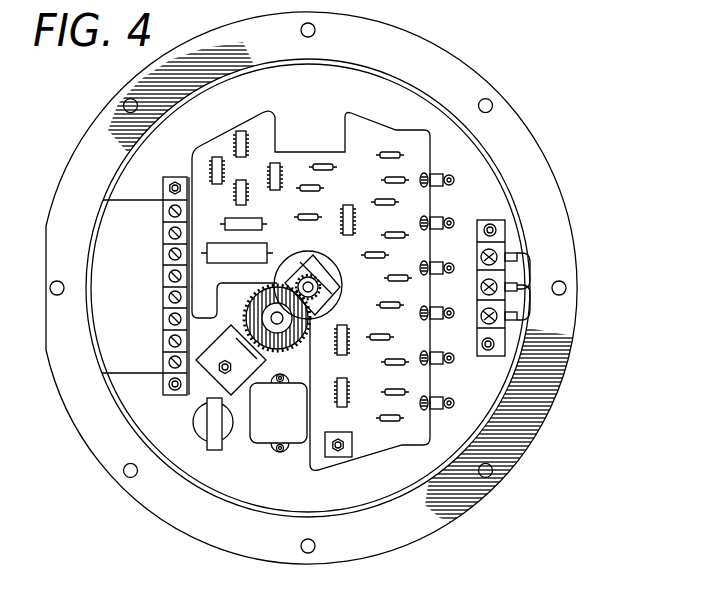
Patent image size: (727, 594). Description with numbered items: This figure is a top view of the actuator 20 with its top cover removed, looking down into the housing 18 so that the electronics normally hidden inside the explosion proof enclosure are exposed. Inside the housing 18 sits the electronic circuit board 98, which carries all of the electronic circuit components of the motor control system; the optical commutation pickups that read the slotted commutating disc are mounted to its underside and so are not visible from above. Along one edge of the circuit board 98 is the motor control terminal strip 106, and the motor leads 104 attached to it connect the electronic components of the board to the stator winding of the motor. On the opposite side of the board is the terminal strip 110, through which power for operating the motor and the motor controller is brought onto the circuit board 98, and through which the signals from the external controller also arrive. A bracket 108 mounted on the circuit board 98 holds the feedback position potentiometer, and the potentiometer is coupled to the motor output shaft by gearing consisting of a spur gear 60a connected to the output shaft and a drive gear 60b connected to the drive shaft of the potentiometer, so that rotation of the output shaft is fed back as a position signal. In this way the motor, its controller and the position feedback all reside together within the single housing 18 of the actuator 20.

The actuator 20 is at (562, 86).
The housing 18 is at (568, 392).
The electronic circuit board 98 is at (257, 111).
The terminal strip 110 is at (174, 186).
The motor control terminal strip 106 is at (492, 220).
The motor leads 104 is at (518, 300).
The bracket 108 is at (196, 358).
The spur gear 60a is at (321, 262).
The drive gear 60b is at (270, 352).